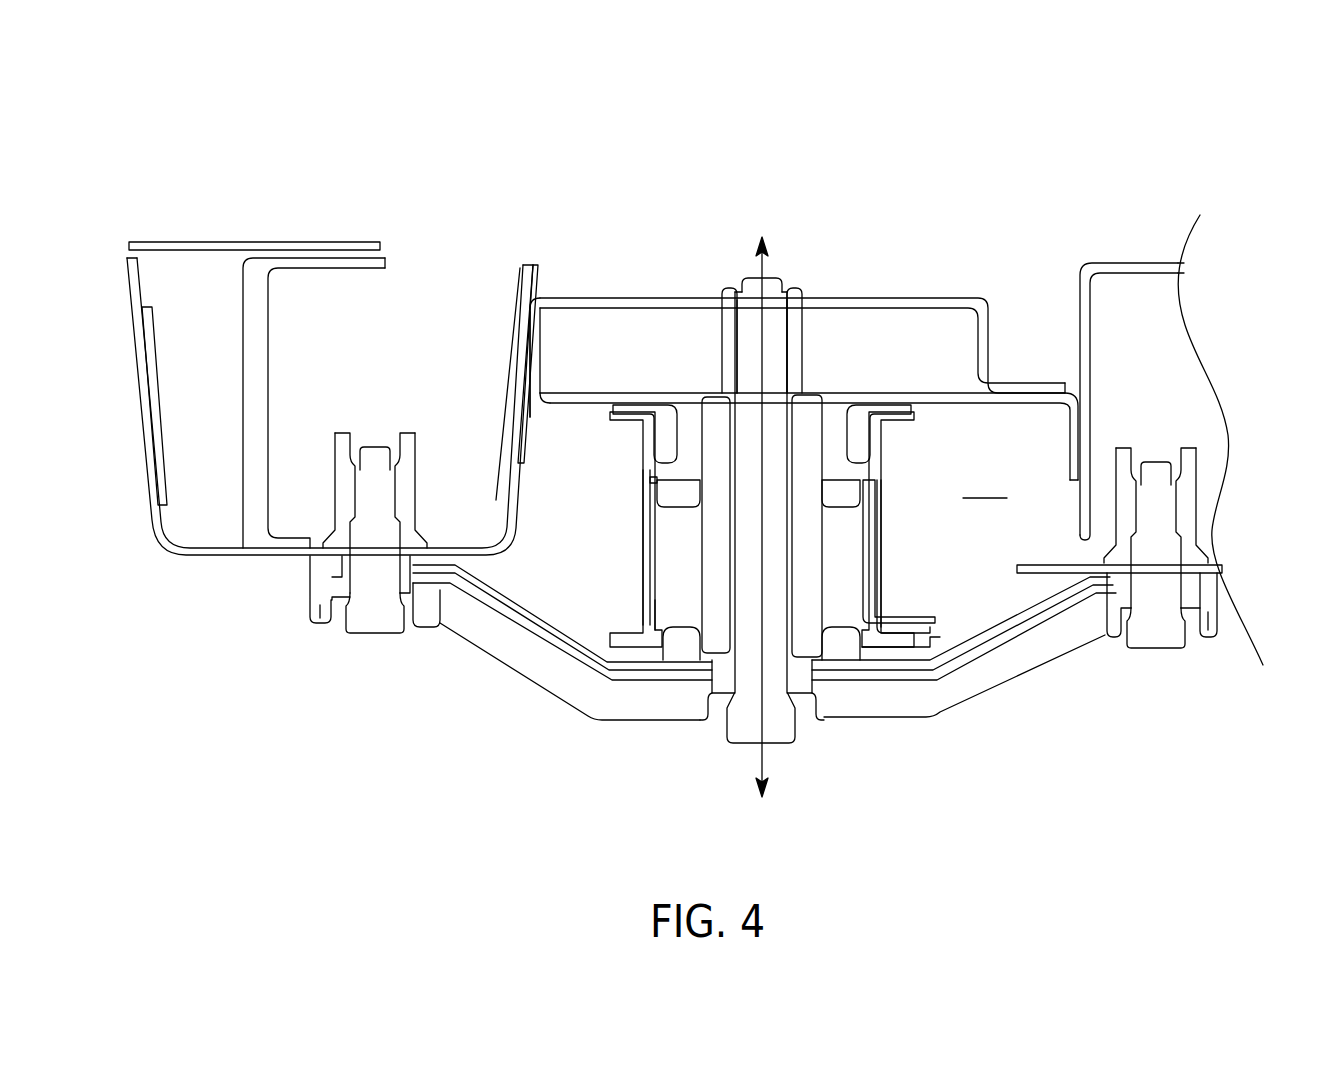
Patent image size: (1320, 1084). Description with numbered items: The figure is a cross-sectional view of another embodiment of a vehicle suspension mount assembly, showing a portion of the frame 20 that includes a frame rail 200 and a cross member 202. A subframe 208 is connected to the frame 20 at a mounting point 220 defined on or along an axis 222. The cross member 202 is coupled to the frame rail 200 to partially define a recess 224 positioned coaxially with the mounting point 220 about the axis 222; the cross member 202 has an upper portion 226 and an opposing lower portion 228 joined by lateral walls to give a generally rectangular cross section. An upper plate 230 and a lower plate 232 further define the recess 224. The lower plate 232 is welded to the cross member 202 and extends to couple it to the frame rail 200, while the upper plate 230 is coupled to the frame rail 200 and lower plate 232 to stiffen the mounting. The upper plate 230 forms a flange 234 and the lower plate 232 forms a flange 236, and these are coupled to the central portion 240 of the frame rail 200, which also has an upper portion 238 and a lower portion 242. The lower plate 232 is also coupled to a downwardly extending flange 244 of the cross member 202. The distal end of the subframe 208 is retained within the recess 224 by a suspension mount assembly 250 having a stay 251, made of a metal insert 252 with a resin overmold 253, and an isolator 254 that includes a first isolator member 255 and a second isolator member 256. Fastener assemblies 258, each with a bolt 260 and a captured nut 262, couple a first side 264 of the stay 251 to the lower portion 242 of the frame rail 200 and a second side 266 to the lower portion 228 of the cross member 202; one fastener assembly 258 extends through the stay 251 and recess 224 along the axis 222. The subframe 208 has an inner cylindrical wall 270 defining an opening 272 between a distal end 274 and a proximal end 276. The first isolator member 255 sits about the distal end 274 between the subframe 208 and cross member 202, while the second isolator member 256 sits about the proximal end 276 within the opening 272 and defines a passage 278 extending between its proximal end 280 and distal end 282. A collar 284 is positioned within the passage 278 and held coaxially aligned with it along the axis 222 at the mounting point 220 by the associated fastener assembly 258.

The frame 20 is at (311, 158).
The frame rail 200 is at (186, 560).
The cross member 202 is at (1128, 263).
The subframe 208 is at (648, 472).
The mounting point 220 is at (896, 218).
The axis 222 is at (758, 263).
The recess 224 is at (985, 485).
The upper portion 226 is at (1180, 270).
The lower portion 228 is at (1215, 571).
The upper plate 230 is at (905, 300).
The lower plate 232 is at (1015, 400).
The flange 234 is at (528, 357).
The flange 236 is at (518, 445).
The upper portion 238 is at (368, 242).
The central portion 240 is at (522, 300).
The lower portion 242 is at (250, 560).
The downwardly extending flange 244 is at (1090, 390).
The suspension mount assembly 250 is at (893, 778).
The stay 251 is at (555, 680).
The metal insert 252 is at (958, 660).
The resin overmold 253 is at (928, 700).
The isolator 254 is at (673, 576).
The first isolator member 255 is at (672, 405).
The second isolator member 256 is at (675, 607).
The fastener assembly 258 is at (366, 644).
The bolt 260 is at (400, 625).
The captured nut 262 is at (343, 436).
The first side 264 is at (312, 602).
The second side 266 is at (1205, 630).
The inner cylindrical wall 270 is at (645, 520).
The opening 272 is at (680, 633).
The distal end 274 is at (873, 438).
The proximal end 276 is at (928, 635).
The passage 278 is at (735, 443).
The proximal end 280 is at (815, 400).
The distal end 282 is at (790, 630).
The collar 284 is at (720, 545).